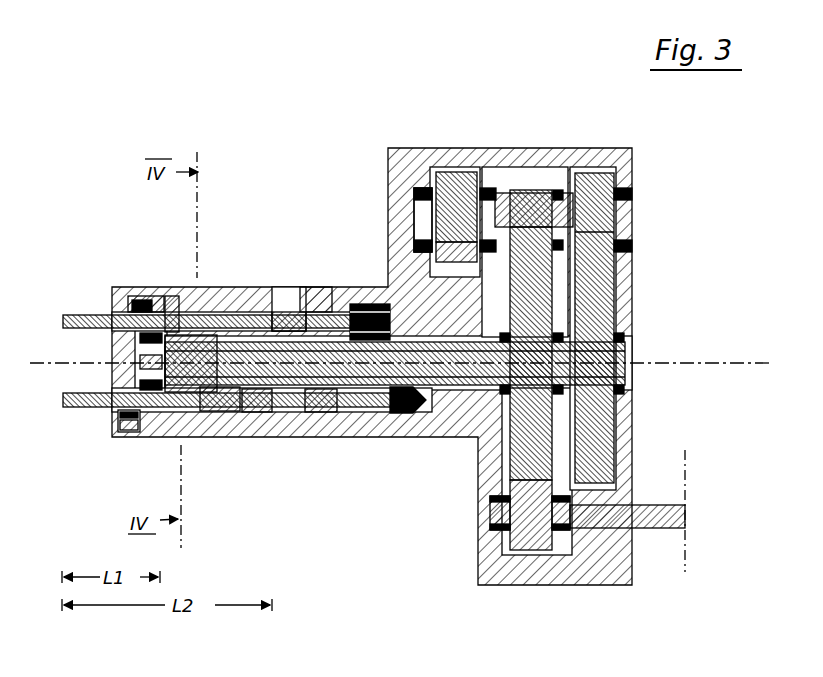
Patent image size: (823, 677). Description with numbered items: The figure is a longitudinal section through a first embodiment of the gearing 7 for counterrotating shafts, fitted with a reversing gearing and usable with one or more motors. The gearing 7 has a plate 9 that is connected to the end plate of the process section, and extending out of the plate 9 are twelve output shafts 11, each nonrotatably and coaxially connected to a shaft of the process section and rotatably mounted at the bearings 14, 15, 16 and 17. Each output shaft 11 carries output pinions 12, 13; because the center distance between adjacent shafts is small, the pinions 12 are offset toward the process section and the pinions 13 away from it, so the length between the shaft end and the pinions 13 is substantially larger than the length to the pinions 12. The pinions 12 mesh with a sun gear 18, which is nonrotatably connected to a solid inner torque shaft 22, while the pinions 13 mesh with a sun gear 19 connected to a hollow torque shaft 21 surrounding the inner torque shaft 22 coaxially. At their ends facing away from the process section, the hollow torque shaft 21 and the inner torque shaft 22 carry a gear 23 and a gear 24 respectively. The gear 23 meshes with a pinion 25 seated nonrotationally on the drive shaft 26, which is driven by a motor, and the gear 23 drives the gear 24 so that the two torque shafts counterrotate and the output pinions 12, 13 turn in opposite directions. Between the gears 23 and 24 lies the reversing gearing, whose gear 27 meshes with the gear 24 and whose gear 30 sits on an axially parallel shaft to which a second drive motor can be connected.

The gearing 7 is at (106, 150).
The plate 9 is at (124, 296).
The output shafts 11 is at (78, 314).
The output pinions 12 is at (170, 300).
The output pinions 13 is at (297, 440).
The bearing 14 is at (108, 437).
The bearing 15 is at (255, 438).
The bearing 16 is at (340, 440).
The bearing 17 is at (410, 440).
The sun gear 18 is at (200, 440).
The sun gear 19 is at (304, 300).
The hollow torque shaft 21 is at (333, 312).
The inner torque shaft 22 is at (367, 440).
The gear 23 is at (516, 443).
The gear 24 is at (605, 275).
The pinion 25 is at (527, 552).
The drive shaft 26 is at (655, 505).
The gear 27 is at (618, 176).
The gear 30 is at (432, 254).